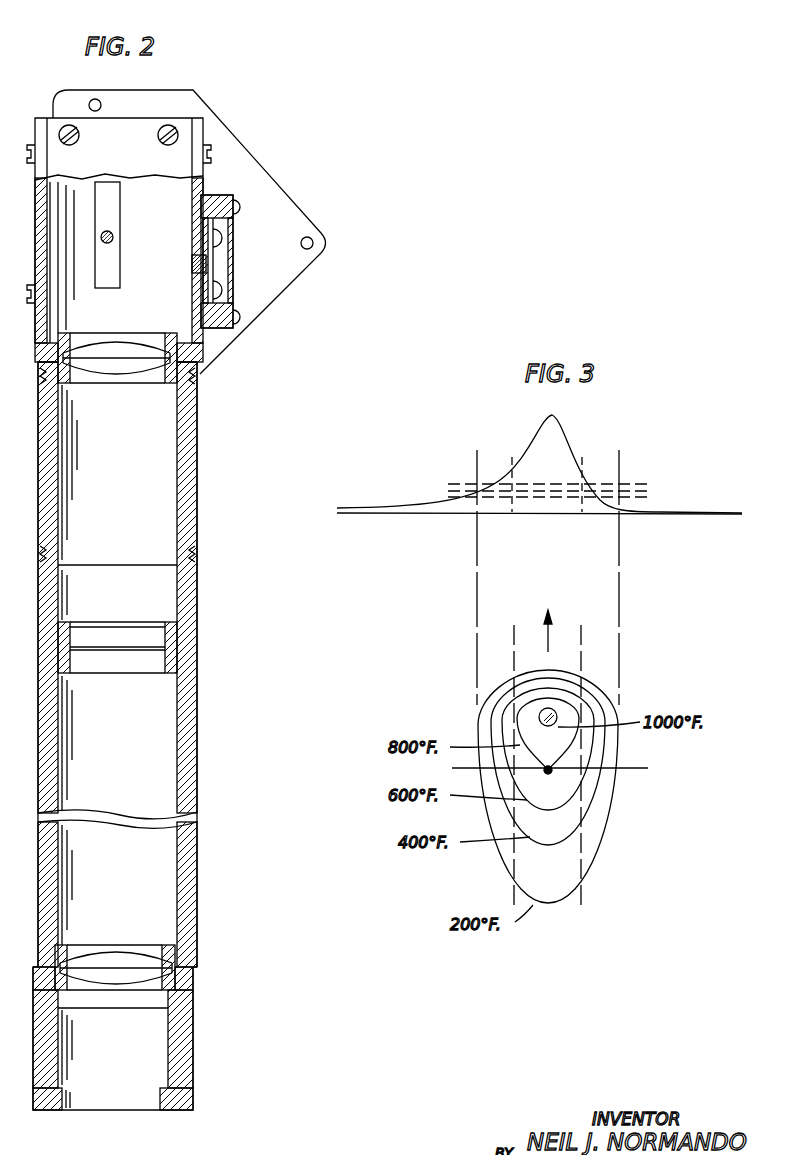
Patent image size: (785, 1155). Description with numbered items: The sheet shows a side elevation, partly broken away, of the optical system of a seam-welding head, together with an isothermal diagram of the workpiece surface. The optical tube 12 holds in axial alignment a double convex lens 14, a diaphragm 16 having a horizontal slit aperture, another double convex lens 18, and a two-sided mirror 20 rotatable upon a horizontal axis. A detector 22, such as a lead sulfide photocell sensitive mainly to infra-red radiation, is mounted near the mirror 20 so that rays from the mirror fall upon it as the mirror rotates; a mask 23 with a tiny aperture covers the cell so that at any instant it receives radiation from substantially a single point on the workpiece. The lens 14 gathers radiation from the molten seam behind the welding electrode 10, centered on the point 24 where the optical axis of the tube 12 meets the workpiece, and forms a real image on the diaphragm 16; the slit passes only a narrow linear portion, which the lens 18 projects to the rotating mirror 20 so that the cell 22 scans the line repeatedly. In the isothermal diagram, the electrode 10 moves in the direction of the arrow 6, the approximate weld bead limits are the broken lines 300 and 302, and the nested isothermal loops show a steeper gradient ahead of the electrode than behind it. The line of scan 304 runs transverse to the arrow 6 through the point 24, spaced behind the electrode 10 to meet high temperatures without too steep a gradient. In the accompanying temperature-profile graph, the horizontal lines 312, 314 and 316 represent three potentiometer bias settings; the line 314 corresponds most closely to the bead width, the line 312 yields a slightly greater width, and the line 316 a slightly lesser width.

In FIG. 3, the arrow 6 is at (555, 632).
In FIG. 3, the welding electrode 10 is at (558, 714).
In FIG. 2, the optical tube 12 is at (183, 752).
In FIG. 2, the double convex lens 14 is at (125, 978).
In FIG. 2, the diaphragm 16 is at (140, 650).
In FIG. 2, the double convex lens 18 is at (130, 368).
In FIG. 2, the two-sided mirror 20 is at (118, 280).
In FIG. 2, the detector 22 is at (196, 262).
In FIG. 2, the mask 23 is at (200, 292).
In FIG. 3, the point 24 is at (552, 768).
In FIG. 3, the broken line 300 is at (514, 643).
In FIG. 3, the broken line 302 is at (583, 845).
In FIG. 3, the line of scan 304 is at (648, 768).
In FIG. 3, the horizontal line 312 is at (640, 498).
In FIG. 3, the horizontal line 314 is at (648, 492).
In FIG. 3, the horizontal line 316 is at (600, 484).